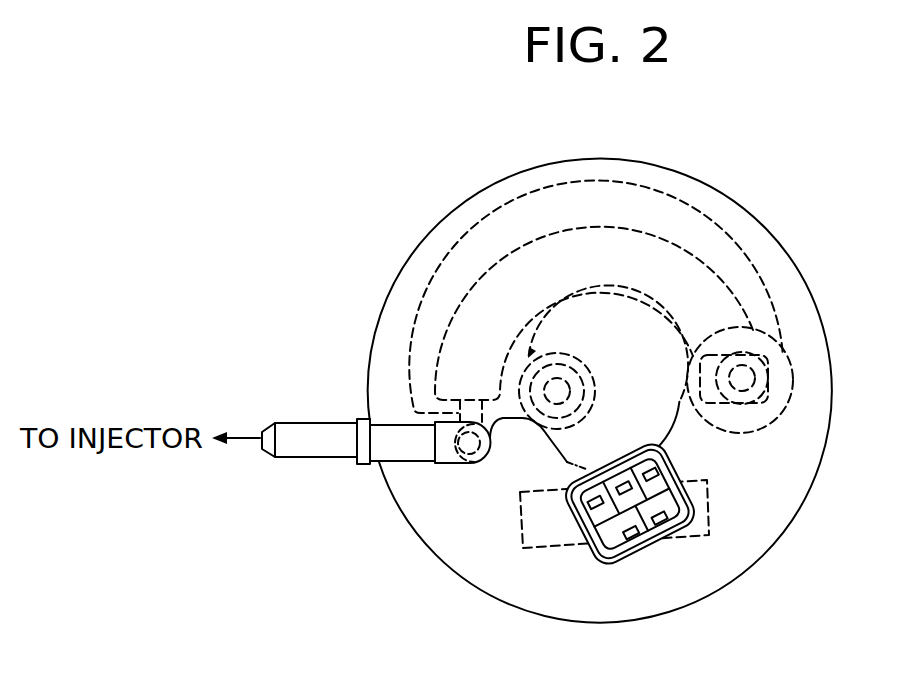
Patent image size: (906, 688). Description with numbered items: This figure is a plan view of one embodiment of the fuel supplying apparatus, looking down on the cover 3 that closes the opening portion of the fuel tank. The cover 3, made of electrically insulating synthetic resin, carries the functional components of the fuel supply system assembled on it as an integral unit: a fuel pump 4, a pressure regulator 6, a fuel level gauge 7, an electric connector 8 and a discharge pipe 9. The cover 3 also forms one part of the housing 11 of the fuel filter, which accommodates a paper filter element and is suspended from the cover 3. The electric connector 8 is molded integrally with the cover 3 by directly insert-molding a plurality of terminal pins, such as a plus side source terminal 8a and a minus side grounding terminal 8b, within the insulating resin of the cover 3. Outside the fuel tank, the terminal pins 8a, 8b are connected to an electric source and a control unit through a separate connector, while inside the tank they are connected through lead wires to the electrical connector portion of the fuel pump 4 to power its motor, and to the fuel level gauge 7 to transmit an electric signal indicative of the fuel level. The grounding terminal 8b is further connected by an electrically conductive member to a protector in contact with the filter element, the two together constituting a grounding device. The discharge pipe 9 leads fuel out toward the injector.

The cover 3 is at (728, 208).
The housing 11 is at (748, 275).
The pressure regulator 6 is at (760, 432).
The fuel pump 4 is at (665, 420).
The discharge pipe 9 is at (317, 454).
The fuel level gauge 7 is at (540, 545).
The electric connector 8 is at (620, 560).
The plus side source terminal 8a is at (643, 560).
The minus side grounding terminal 8b is at (673, 547).